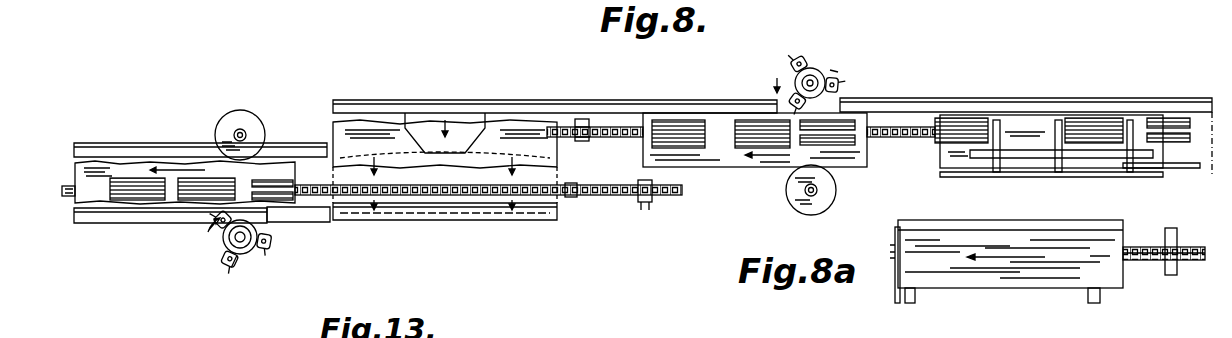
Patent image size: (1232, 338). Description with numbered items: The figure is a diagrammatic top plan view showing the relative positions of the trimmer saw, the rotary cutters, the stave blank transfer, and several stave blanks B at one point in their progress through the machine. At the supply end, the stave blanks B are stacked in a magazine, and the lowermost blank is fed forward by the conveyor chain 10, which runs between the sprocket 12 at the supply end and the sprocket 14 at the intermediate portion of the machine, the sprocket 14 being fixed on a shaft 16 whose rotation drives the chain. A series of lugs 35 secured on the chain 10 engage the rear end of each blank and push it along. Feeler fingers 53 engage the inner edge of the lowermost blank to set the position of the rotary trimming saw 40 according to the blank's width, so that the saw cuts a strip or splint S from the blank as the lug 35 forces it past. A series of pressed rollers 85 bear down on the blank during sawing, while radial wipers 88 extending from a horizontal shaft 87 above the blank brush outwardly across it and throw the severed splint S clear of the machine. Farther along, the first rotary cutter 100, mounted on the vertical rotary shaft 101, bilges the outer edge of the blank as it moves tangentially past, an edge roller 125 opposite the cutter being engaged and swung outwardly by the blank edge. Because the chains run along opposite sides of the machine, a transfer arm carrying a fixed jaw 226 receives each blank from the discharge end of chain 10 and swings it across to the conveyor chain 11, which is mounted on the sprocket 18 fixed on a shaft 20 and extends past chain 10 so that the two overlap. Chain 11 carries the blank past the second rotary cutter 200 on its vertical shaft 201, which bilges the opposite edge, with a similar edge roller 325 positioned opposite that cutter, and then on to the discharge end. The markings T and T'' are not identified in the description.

In FIG. 8, the edge roller 325 is at (238, 118).
In FIG. 8, the tray T is at (660, 109).
In FIG. 8, the stave blank conveyor chain 11 is at (64, 190).
In FIG. 8, the second rotary cutter 200 is at (268, 240).
In FIG. 8, the shaft 201 is at (233, 262).
In FIG. 8, the lugs 35 is at (292, 192).
In FIG. 8A, the lugs 35 is at (1125, 250).
In FIG. 8, the fixed jaw 226 is at (430, 128).
In FIG. 8, the shaft 16 is at (582, 118).
In FIG. 8, the sprocket 14 is at (590, 127).
In FIG. 8, the tray T'' is at (445, 231).
In FIG. 8, the shaft 20 is at (648, 210).
In FIG. 8, the sprocket 18 is at (654, 201).
In FIG. 8, the first rotary cutter 100 is at (826, 60).
In FIG. 8, the rotary shaft 101 is at (840, 88).
In FIG. 8, the edge roller 125 is at (832, 200).
In FIG. 8, the conveyor chain 10 is at (910, 153).
In FIG. 8A, the conveyor chain 10 is at (1202, 262).
In FIG. 8, the rollers 85 is at (1155, 118).
In FIG. 8, the horizontal shaft 87 is at (1020, 155).
In FIG. 8, the splint S is at (1030, 177).
In FIG. 8, the wipers 88 is at (1060, 172).
In FIG. 8, the rotary trimming saw 40 is at (1187, 170).
In FIG. 8A, the sprocket 12 is at (1180, 247).
In FIG. 8A, the feeler fingers 53 is at (915, 295).
In FIG. 8A, the stave blanks B is at (1035, 283).